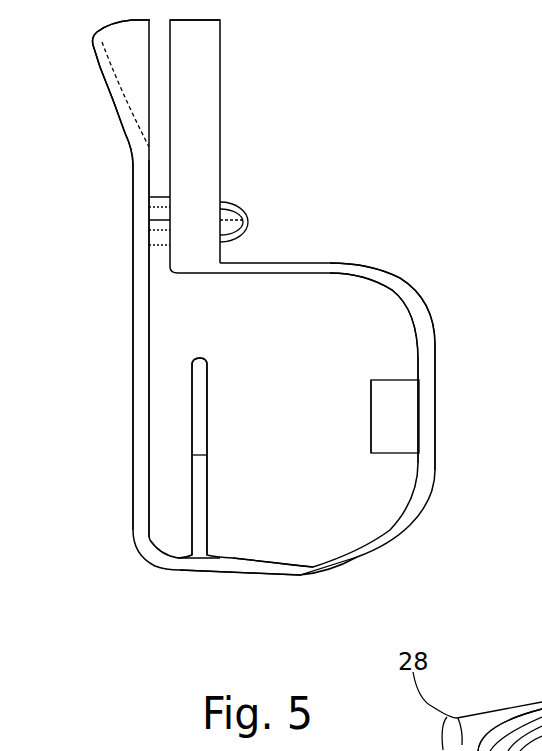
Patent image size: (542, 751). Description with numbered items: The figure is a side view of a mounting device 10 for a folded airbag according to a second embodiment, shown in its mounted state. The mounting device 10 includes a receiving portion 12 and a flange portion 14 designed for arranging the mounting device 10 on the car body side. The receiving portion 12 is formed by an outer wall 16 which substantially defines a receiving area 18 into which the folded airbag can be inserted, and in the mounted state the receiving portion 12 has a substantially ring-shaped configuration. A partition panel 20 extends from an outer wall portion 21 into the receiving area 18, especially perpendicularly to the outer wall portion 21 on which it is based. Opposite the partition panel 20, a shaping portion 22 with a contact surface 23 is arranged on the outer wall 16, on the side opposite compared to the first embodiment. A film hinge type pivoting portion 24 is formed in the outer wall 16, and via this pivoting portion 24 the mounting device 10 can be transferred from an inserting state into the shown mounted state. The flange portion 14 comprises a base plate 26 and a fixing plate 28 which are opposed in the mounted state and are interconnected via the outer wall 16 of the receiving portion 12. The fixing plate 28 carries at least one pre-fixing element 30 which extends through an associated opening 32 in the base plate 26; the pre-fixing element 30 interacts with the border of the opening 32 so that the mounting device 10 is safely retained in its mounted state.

The mounting device 10 is at (425, 183).
The receiving portion 12 is at (452, 493).
The flange portion 14 is at (239, 122).
The outer wall 16 is at (133, 397).
The receiving area 18 is at (296, 424).
The partition panel 20 is at (197, 490).
The outer wall portion 21 is at (205, 557).
The shaping portion 22 is at (402, 415).
The contact surface 23 is at (370, 402).
The pivoting portion 24 is at (308, 579).
The base plate 26 is at (205, 43).
The fixing plate 28 is at (133, 130).
The pre-fixing element 30 is at (245, 210).
The opening 32 is at (515, 750).